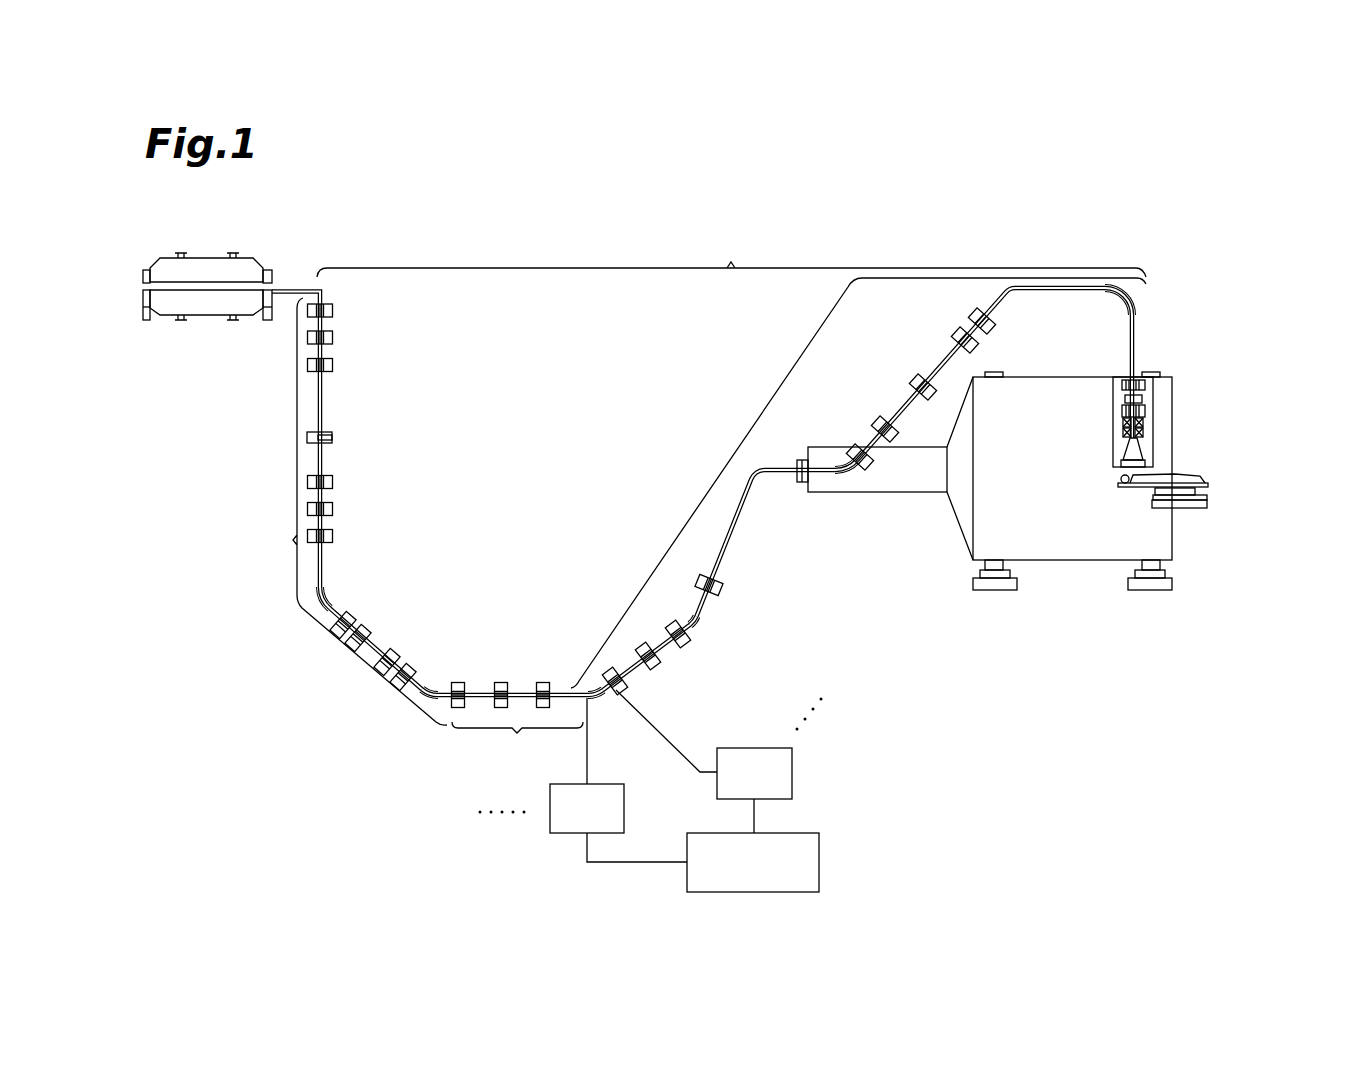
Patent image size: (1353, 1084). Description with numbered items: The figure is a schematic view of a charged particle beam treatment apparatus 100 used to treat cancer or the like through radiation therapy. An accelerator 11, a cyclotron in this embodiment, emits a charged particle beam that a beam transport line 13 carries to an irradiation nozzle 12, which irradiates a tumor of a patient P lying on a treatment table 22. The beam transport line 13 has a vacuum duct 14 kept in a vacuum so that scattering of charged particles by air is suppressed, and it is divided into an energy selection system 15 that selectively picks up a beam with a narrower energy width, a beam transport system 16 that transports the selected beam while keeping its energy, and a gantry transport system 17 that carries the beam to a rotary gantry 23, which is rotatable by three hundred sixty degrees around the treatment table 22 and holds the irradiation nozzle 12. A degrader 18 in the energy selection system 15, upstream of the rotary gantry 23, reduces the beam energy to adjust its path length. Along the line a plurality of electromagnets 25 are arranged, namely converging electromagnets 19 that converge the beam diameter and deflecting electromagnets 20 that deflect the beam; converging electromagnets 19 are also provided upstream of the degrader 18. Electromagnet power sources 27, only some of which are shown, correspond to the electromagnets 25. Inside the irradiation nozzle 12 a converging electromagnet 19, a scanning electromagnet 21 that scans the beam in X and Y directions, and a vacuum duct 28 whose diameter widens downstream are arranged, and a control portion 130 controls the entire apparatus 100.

The charged particle beam treatment apparatus 100 is at (332, 220).
The accelerator 11 is at (167, 254).
The irradiation nozzle 12 is at (1154, 432).
The beam transport line 13 is at (731, 258).
The vacuum duct 14 is at (334, 322).
The energy selection system (ESS) 15 is at (354, 511).
The beam transport system (BTS) 16 is at (517, 743).
The gantry transport system (GTS) 17 is at (712, 478).
The degrader 18 is at (334, 437).
The converging electromagnet 19 is at (334, 365).
The deflecting electromagnet 20 is at (329, 600).
The scanning electromagnet 21 is at (1122, 432).
The treatment table 22 is at (1208, 490).
The rotary gantry 23 is at (1173, 543).
The electromagnet 25 is at (779, 523).
The electromagnet power source 27 is at (626, 796).
The vacuum duct 28 is at (1122, 450).
The control portion 130 is at (821, 849).
The patient P is at (1151, 468).